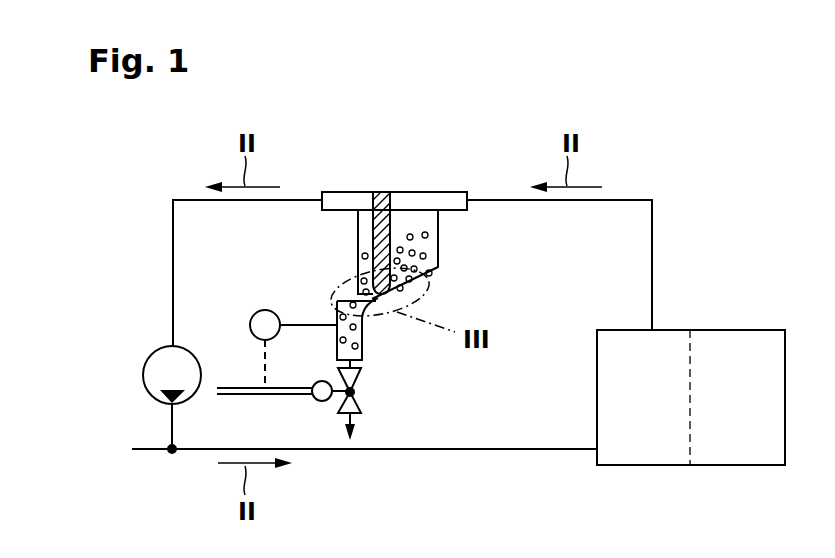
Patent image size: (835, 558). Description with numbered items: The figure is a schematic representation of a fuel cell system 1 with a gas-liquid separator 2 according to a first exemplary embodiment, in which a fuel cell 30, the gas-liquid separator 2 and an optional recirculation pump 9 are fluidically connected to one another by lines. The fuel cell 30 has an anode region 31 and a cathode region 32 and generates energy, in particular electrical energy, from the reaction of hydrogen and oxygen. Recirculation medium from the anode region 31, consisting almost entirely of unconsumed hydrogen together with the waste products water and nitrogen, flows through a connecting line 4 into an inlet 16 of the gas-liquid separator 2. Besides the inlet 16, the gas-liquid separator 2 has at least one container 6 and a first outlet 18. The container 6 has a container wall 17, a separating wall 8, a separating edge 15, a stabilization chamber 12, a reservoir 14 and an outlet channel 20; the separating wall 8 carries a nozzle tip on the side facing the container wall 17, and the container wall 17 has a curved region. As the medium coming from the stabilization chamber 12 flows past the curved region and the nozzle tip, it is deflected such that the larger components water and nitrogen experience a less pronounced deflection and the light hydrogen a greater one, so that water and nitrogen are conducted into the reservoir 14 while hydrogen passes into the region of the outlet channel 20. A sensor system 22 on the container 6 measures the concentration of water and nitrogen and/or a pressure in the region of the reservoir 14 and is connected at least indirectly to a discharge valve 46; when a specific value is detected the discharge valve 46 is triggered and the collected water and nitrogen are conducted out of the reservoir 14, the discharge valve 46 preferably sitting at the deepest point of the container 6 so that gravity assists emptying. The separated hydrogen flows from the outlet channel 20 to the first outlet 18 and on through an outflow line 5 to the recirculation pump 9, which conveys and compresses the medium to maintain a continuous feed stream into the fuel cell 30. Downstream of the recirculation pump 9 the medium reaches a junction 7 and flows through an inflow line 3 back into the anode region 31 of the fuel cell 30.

The fuel cell system 1 is at (735, 150).
The gas-liquid separator 2 is at (416, 180).
The inflow line 3 is at (428, 452).
The connecting line 4 is at (628, 199).
The outflow line 5 is at (173, 256).
The container 6 is at (440, 268).
The junction 7 is at (172, 453).
The separating wall 8 is at (381, 191).
The recirculation pump 9 is at (152, 356).
The stabilization chamber 12 is at (423, 213).
The reservoir 14 is at (360, 351).
The separating edge 15 is at (346, 290).
The inlet 16 is at (455, 205).
The container wall 17 is at (458, 257).
The first outlet 18 is at (335, 205).
The outlet channel 20 is at (358, 222).
The sensor system 22 is at (297, 323).
The fuel cell 30 is at (713, 316).
The anode region 31 is at (633, 450).
The cathode region 32 is at (751, 450).
The discharge valve 46 is at (357, 403).